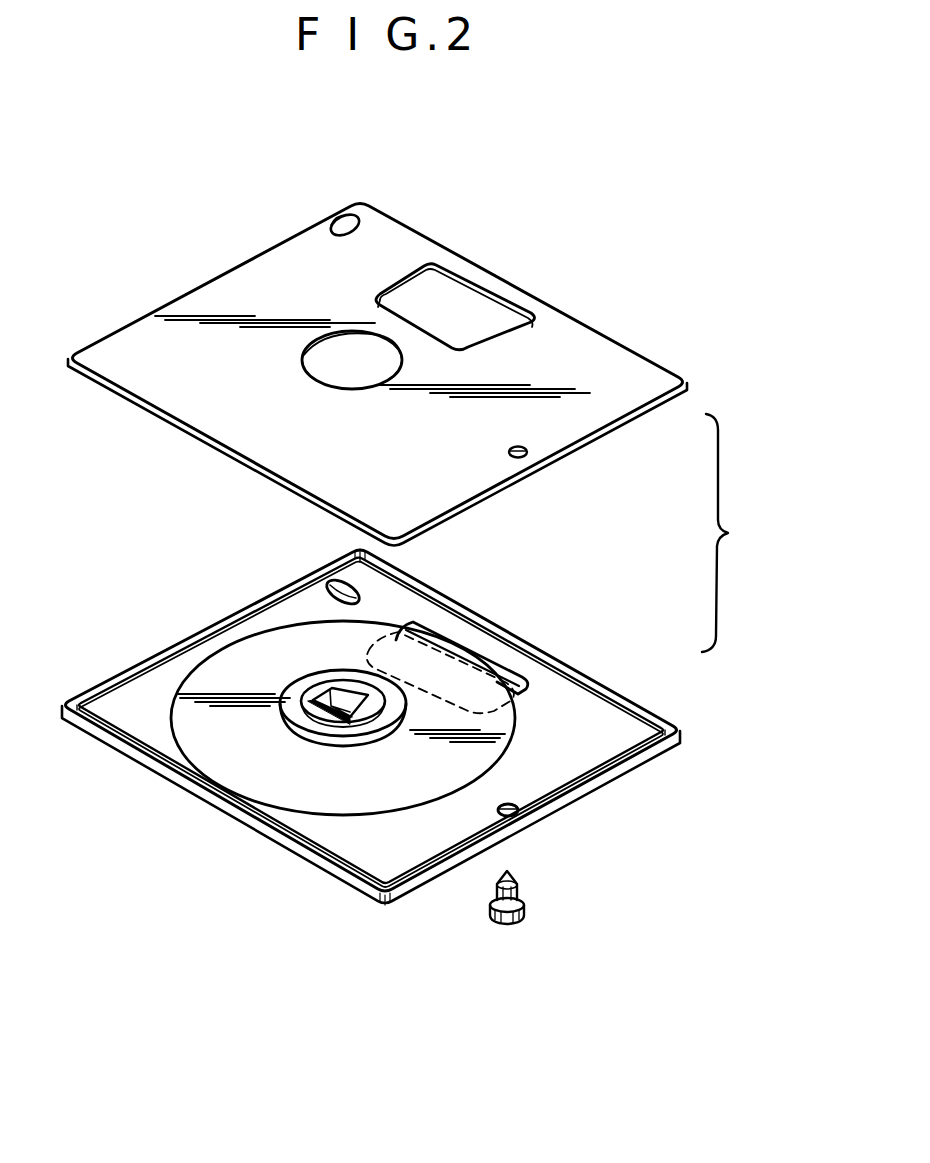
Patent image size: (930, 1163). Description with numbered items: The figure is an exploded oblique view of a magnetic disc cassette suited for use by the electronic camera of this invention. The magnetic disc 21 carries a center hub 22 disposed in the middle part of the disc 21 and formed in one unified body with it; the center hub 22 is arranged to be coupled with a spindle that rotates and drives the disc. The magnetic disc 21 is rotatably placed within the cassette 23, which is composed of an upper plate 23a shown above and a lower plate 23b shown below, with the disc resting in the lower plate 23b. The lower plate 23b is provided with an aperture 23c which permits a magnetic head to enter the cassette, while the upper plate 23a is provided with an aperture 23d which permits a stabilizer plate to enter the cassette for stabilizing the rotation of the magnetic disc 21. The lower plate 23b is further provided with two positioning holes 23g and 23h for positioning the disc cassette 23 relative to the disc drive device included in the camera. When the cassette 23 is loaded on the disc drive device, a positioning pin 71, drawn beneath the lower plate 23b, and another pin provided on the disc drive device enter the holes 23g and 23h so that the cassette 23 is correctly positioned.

The magnetic disc 21 is at (223, 758).
The center hub 22 is at (310, 680).
The cassette 23 is at (761, 552).
The upper plate 23a is at (583, 358).
The lower plate 23b is at (365, 847).
The aperture 23c is at (507, 678).
The aperture 23d is at (470, 302).
The positioning hole 23g is at (517, 815).
The positioning hole 23h is at (352, 592).
The positioning pin 71 is at (520, 893).